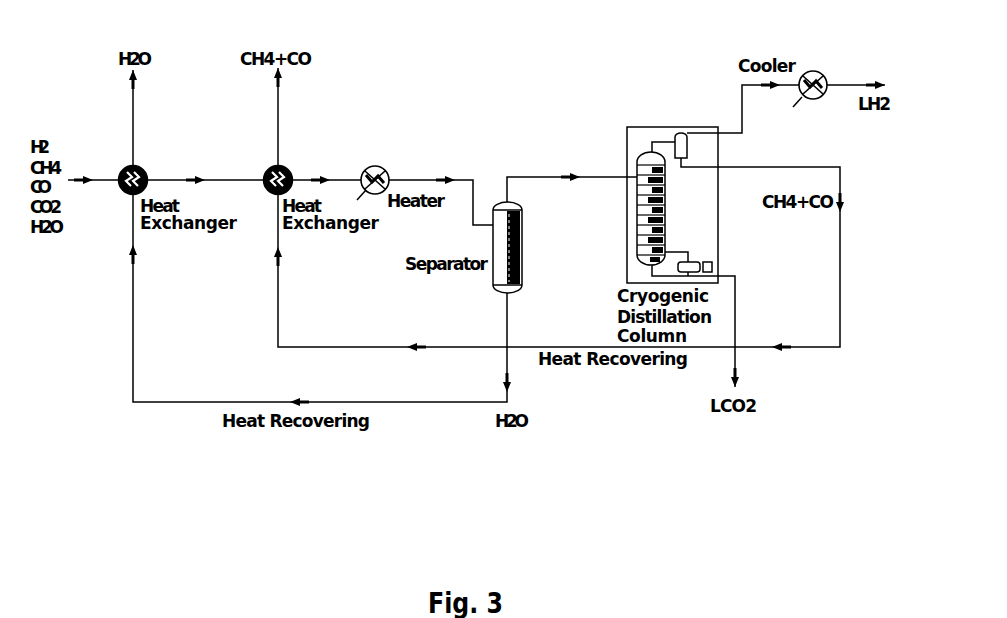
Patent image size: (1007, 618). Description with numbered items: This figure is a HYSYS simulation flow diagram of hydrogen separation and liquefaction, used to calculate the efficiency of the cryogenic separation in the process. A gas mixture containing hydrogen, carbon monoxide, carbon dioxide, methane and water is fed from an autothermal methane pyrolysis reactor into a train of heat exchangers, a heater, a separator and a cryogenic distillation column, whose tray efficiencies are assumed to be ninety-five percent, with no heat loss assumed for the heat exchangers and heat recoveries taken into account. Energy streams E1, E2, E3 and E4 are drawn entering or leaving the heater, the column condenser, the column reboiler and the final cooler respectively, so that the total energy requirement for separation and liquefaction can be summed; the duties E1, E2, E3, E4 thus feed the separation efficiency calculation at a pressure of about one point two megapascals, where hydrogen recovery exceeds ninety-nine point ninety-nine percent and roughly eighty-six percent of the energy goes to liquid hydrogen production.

The heater energy stream E1 is at (409, 151).
The condenser energy stream E2 is at (687, 142).
The reboiler energy stream E3 is at (753, 245).
The cooler energy stream E4 is at (843, 58).